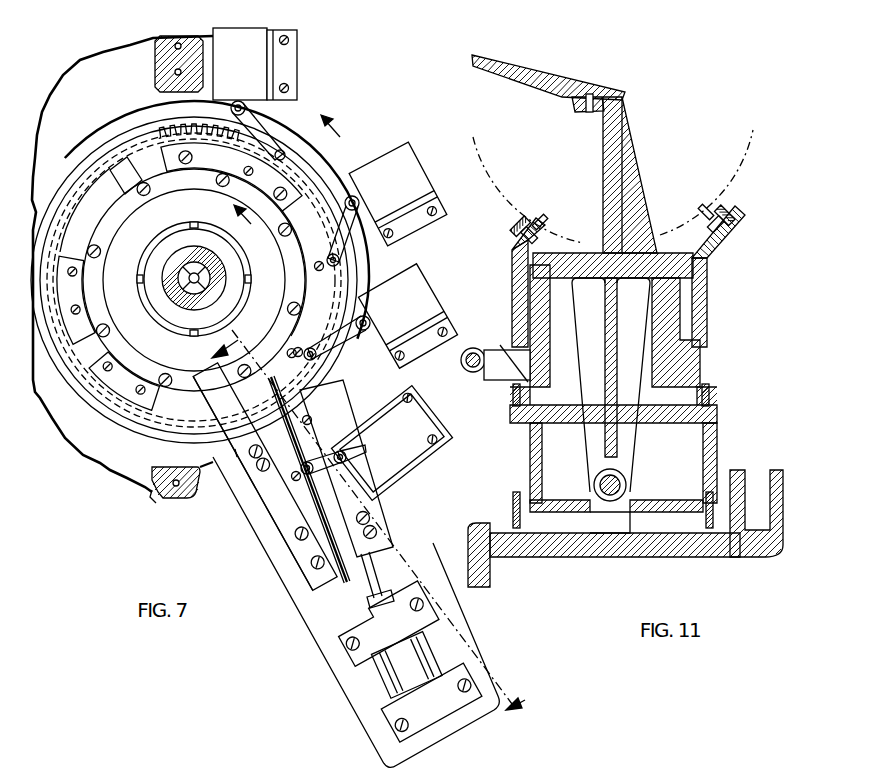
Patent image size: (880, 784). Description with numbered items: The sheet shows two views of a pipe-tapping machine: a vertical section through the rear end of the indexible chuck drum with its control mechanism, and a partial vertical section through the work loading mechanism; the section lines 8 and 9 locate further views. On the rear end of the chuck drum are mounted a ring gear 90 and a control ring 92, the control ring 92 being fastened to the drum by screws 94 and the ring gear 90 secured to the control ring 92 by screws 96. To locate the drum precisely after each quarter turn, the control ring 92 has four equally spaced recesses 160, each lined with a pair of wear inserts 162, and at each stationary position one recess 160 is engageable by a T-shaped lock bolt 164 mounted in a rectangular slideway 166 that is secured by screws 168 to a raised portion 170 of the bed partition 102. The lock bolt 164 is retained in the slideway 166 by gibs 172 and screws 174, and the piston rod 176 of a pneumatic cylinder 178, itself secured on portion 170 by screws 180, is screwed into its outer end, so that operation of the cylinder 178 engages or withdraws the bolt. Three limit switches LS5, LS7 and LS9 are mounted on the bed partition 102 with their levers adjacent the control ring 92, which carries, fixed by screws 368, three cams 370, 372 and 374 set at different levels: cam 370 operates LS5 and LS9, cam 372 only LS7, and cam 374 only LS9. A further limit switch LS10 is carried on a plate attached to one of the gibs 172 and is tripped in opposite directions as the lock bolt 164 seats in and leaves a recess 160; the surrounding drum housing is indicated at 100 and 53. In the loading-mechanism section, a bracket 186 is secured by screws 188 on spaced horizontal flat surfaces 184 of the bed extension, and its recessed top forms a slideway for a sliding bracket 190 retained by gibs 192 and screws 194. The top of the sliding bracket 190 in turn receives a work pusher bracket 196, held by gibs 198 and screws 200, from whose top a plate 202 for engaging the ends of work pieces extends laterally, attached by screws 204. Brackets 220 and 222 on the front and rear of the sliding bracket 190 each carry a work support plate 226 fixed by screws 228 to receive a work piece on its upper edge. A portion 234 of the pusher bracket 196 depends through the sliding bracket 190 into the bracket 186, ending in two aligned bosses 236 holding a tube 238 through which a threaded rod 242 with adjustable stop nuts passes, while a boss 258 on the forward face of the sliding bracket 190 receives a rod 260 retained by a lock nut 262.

In FIG. 7, the housing 100 is at (157, 50).
In FIG. 7, the bed partition 102 is at (128, 160).
In FIG. 7, the ring gear 90 is at (168, 128).
In FIG. 7, the recesses 160 is at (128, 162).
In FIG. 7, the screws 96 is at (85, 205).
In FIG. 7, the drum 53 is at (148, 428).
In FIG. 7, the screws 368 is at (246, 166).
In FIG. 7, the cam 372 is at (72, 283).
In FIG. 7, the cam 374 is at (130, 380).
In FIG. 7, the control ring 92 is at (196, 180).
In FIG. 7, the screws 94 is at (288, 306).
In FIG. 7, the wear inserts 162 is at (272, 200).
In FIG. 7, the cam 370 is at (280, 150).
In FIG. 7, the lock bolt 164 is at (290, 470).
In FIG. 7, the rectangular slideway 166 is at (292, 538).
In FIG. 7, the screws 168 is at (300, 538).
In FIG. 7, the raised portion 170 is at (300, 588).
In FIG. 7, the gibs 172 is at (310, 552).
In FIG. 7, the screws 174 is at (375, 518).
In FIG. 7, the piston rod 176 is at (365, 598).
In FIG. 7, the pneumatic cylinder 178 is at (385, 665).
In FIG. 7, the screws 180 is at (405, 735).
In FIG. 7, the section line 8 is at (383, 526).
In FIG. 7, the section line 9 is at (288, 176).
In FIG. 7, the limit switch LS5 is at (255, 64).
In FIG. 7, the limit switch LS7 is at (381, 206).
In FIG. 7, the limit switch LS9 is at (376, 316).
In FIG. 7, the limit switch LS10 is at (378, 443).
In FIG. 11, the plate 202 is at (505, 72).
In FIG. 11, the screws 204 is at (582, 108).
In FIG. 11, the work pusher bracket 196 is at (606, 172).
In FIG. 11, the gibs 198 is at (650, 245).
In FIG. 11, the screws 200 is at (548, 252).
In FIG. 11, the bracket 220 is at (513, 296).
In FIG. 11, the bracket 222 is at (708, 292).
In FIG. 11, the work support plate 226 is at (532, 220).
In FIG. 11, the screws 228 is at (530, 225).
In FIG. 11, the sliding bracket 190 is at (700, 358).
In FIG. 11, the depending portion 234 is at (630, 313).
In FIG. 11, the gibs 192 is at (510, 388).
In FIG. 11, the screws 194 is at (510, 408).
In FIG. 11, the bracket 186 is at (530, 453).
In FIG. 11, the screws 188 is at (515, 492).
In FIG. 11, the horizontal flat surfaces 184 is at (530, 550).
In FIG. 11, the bosses 236 is at (614, 505).
In FIG. 11, the tube 238 is at (594, 490).
In FIG. 11, the threaded rod 242 is at (620, 482).
In FIG. 11, the boss 258 is at (503, 345).
In FIG. 11, the rod 260 is at (474, 352).
In FIG. 11, the lock nut 262 is at (463, 368).